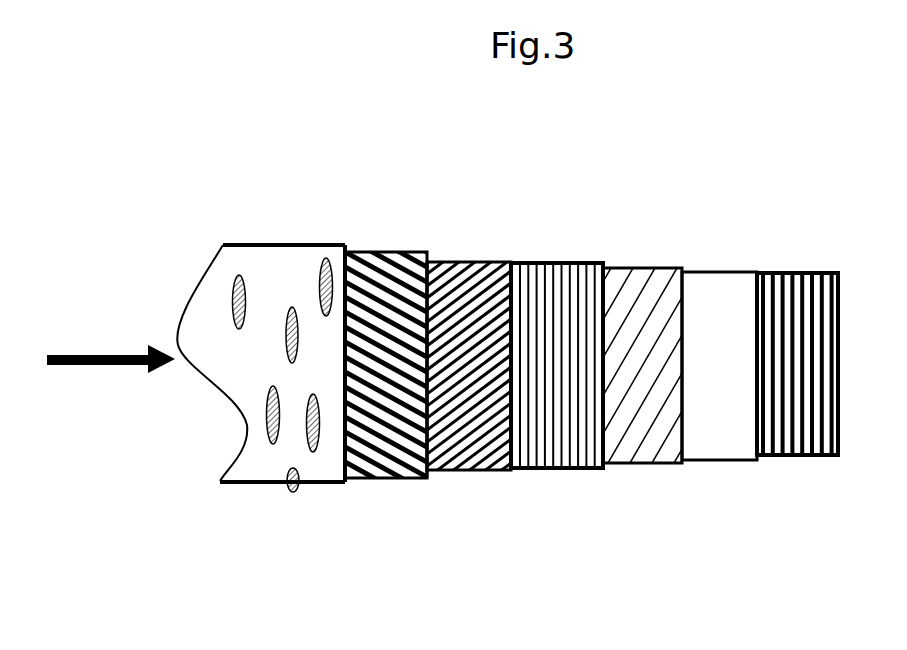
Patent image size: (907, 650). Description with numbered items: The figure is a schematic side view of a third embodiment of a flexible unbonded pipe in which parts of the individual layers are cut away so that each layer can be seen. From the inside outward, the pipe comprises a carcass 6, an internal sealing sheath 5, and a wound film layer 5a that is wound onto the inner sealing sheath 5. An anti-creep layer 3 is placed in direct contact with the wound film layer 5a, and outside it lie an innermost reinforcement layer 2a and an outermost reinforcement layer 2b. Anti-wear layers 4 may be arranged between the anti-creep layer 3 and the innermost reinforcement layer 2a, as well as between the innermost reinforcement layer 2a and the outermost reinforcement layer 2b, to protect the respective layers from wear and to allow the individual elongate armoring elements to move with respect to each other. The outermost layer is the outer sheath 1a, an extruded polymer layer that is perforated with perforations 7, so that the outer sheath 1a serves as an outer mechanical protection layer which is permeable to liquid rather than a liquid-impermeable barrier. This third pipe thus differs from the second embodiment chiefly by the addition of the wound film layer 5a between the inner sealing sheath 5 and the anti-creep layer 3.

The outer sheath 1a is at (269, 251).
The perforations 7 is at (303, 438).
The outermost reinforcement layer 2b is at (379, 264).
The innermost reinforcement layer 2a is at (466, 265).
The anti-wear layers 4 is at (435, 489).
The anti-creep layer 3 is at (570, 452).
The wound film layer 5a is at (642, 450).
The internal sealing sheath 5 is at (714, 450).
The carcass 6 is at (804, 457).